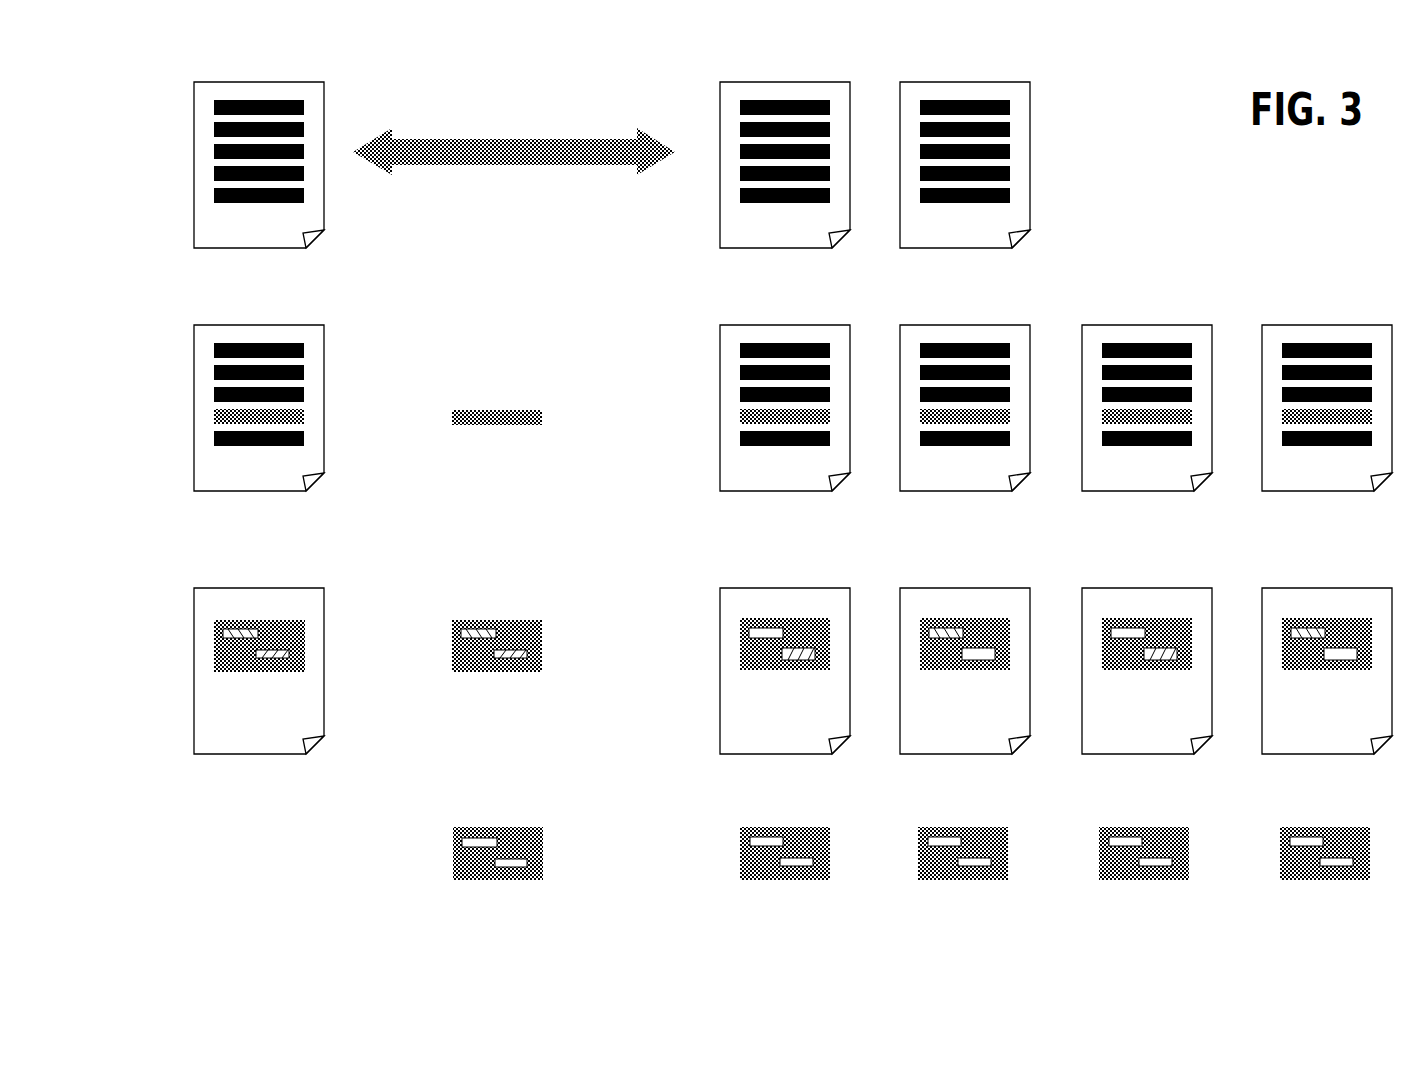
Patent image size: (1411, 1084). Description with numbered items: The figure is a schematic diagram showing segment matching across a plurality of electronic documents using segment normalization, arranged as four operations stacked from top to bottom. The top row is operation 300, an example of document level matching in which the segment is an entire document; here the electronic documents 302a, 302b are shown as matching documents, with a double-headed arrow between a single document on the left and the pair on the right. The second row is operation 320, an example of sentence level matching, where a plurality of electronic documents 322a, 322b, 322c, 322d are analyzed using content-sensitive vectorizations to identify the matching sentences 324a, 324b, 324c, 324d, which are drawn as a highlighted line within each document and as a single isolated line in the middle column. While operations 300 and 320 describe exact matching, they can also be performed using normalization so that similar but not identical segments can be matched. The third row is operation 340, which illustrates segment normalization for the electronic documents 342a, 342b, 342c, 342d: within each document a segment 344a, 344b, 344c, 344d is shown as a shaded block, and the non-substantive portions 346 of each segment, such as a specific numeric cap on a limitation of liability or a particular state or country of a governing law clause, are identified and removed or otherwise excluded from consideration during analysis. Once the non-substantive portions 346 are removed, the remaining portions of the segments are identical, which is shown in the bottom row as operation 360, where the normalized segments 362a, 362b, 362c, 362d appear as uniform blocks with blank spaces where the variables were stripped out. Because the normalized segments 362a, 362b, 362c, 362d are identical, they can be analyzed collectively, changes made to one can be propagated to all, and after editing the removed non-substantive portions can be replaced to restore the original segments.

The operation 300 is at (174, 113).
The electronic document 302a is at (718, 96).
The electronic document 302b is at (898, 94).
The operation 320 is at (175, 399).
The electronic document 322a is at (718, 347).
The electronic document 322b is at (898, 347).
The electronic document 322c is at (1080, 347).
The electronic document 322d is at (1260, 346).
The matching sentence 324a is at (748, 422).
The matching sentence 324b is at (928, 422).
The matching sentence 324c is at (1113, 422).
The matching sentence 324d is at (1283, 420).
The operation 340 is at (183, 634).
The electronic document 342a is at (721, 595).
The electronic document 342b is at (901, 595).
The electronic document 342c is at (1083, 595).
The electronic document 342d is at (1263, 595).
The segment 344a is at (747, 661).
The segment 344b is at (927, 661).
The segment 344c is at (1117, 661).
The segment 344d is at (1289, 661).
The non-substantive portion 346 is at (764, 639).
The operation 360 is at (176, 849).
The normalized segment 362a is at (766, 851).
The normalized segment 362b is at (946, 861).
The normalized segment 362c is at (1136, 851).
The normalized segment 362d is at (1304, 851).